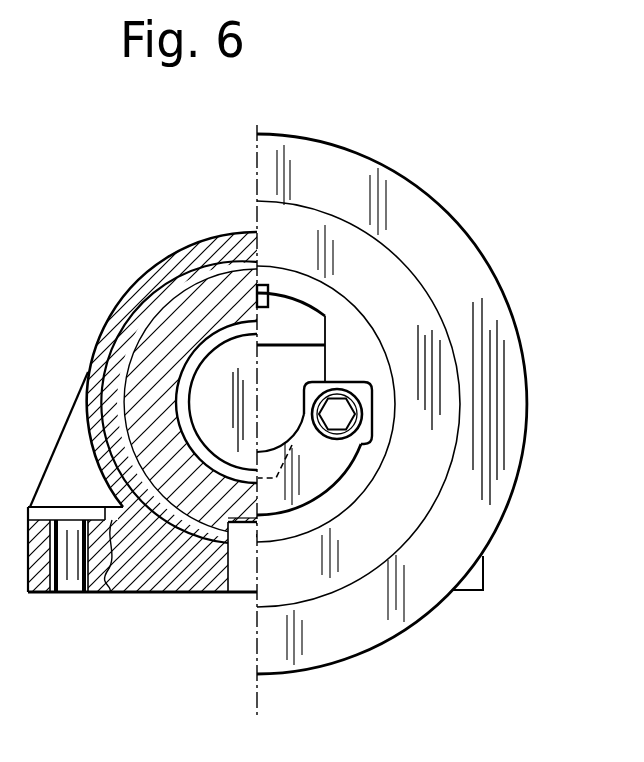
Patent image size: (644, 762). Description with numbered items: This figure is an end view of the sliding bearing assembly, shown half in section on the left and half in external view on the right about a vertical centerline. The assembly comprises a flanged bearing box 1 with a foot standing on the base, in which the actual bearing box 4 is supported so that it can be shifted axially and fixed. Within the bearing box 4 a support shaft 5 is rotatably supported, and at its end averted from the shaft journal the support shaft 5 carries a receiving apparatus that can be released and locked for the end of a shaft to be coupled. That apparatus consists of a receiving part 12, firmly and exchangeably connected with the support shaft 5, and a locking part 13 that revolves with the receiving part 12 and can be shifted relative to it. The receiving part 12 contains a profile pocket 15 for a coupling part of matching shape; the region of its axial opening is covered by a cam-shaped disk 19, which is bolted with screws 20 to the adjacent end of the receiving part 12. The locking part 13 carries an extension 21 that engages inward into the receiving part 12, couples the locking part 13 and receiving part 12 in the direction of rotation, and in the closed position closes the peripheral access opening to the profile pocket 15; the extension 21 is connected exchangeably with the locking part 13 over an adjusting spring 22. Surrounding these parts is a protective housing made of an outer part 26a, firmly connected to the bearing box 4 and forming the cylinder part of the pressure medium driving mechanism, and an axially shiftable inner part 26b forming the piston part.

The flanged bearing box 1 is at (137, 592).
The bearing box 4 is at (183, 317).
The support shaft 5 is at (210, 380).
The receiving part 12 is at (333, 338).
The locking part 13 is at (383, 385).
The profile pocket 15 is at (267, 397).
The cam-shaped disk 19 is at (312, 490).
The screws 20 is at (340, 408).
The extension 21 is at (283, 310).
The adjusting spring 22 is at (260, 285).
The outer part of the protective housing 26a is at (365, 615).
The inner part of the protective housing 26b is at (415, 458).